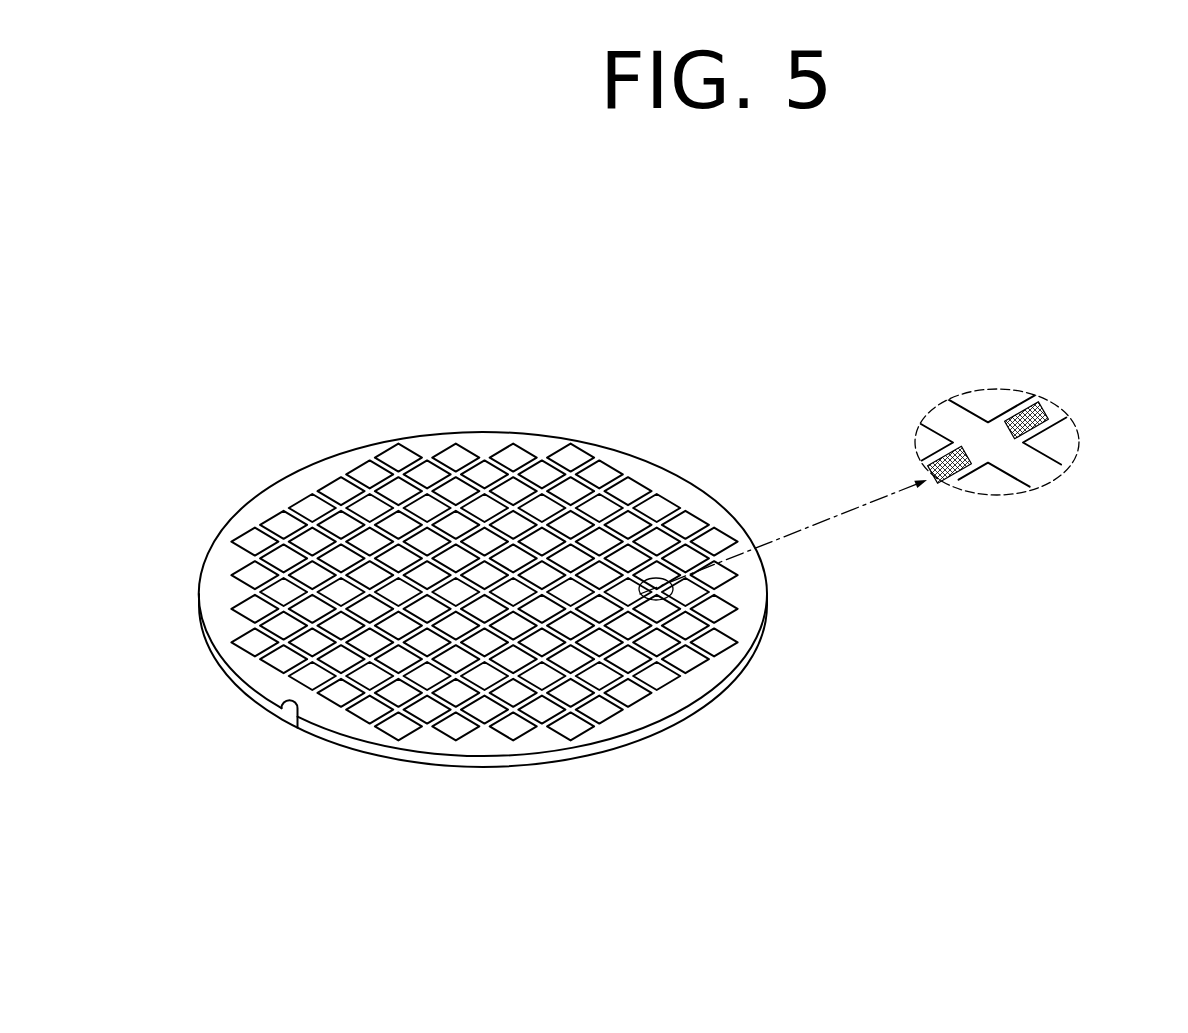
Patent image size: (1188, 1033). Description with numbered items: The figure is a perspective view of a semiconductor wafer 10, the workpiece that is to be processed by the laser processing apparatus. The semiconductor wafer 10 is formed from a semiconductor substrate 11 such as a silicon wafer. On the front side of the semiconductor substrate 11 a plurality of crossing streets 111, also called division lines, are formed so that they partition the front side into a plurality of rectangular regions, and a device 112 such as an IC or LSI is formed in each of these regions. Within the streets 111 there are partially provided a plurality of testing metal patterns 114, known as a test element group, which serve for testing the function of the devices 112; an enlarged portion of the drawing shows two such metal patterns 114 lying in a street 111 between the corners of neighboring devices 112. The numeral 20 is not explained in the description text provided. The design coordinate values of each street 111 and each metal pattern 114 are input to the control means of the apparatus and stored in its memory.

The semiconductor wafer 10 is at (576, 398).
The semiconductor substrate 11 is at (686, 472).
The outer peripheral edge of wafer 20 is at (781, 613).
The streets 111 is at (290, 678).
The devices 112 is at (457, 695).
The testing metal patterns 114 is at (1027, 408).